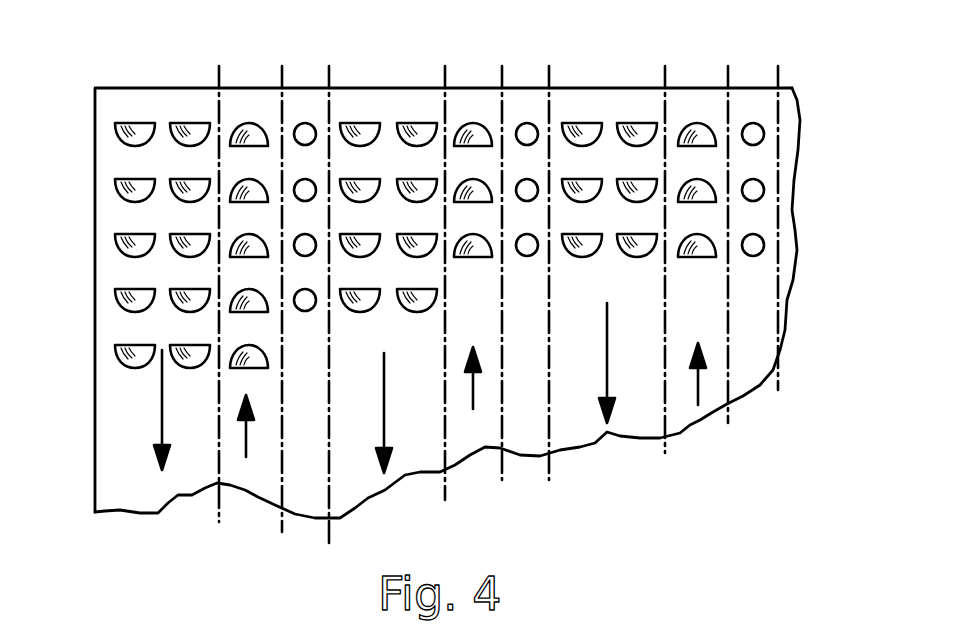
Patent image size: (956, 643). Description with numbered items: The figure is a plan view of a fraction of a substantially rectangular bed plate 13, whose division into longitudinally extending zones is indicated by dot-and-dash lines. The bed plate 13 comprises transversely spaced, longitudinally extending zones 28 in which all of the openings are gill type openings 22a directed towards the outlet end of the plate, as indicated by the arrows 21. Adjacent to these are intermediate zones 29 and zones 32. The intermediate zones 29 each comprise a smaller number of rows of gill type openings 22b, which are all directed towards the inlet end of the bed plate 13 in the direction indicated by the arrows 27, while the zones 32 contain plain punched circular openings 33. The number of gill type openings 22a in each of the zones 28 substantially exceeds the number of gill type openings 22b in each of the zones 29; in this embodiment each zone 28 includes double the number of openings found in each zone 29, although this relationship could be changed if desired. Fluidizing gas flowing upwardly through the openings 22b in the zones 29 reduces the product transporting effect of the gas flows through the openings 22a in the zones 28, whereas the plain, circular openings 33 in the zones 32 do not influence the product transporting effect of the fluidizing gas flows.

The bed plate 13 is at (110, 333).
The arrows 21 is at (162, 427).
The gill type openings 22a is at (182, 142).
The gill type openings 22b is at (251, 122).
The arrows 27 is at (246, 437).
The zones 28 is at (150, 100).
The intermediate zones 29 is at (230, 100).
The zones 32 is at (306, 104).
The plain punched circular openings 33 is at (313, 307).